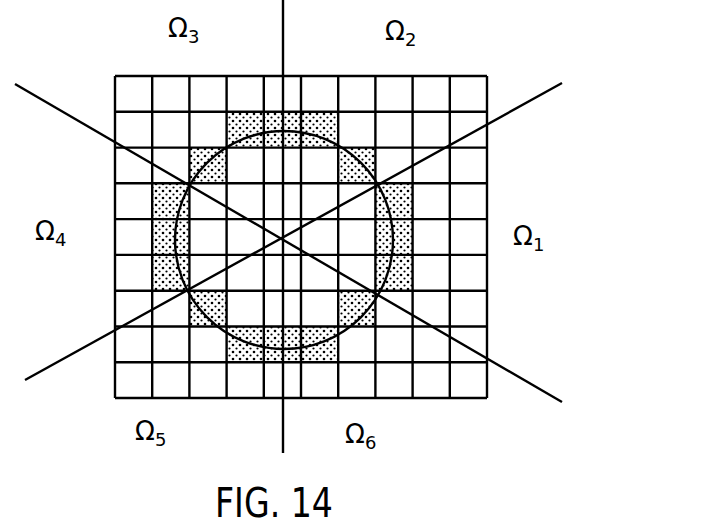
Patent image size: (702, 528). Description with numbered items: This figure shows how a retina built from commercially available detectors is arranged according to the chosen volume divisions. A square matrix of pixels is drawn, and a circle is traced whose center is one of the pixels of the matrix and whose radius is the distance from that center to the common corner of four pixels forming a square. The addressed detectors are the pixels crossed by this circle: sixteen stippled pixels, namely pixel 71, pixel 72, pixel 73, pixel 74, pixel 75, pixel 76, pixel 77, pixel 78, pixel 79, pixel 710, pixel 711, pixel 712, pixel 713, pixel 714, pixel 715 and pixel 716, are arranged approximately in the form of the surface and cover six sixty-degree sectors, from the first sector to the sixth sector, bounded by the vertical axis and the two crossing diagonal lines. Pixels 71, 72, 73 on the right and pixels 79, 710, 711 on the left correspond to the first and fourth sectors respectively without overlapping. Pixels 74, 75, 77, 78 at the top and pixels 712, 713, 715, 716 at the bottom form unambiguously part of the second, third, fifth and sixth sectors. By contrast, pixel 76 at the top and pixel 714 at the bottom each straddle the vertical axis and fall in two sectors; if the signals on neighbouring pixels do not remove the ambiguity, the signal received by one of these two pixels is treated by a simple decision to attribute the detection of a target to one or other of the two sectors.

The pixel 71 is at (410, 283).
The pixel 72 is at (413, 245).
The pixel 73 is at (413, 208).
The pixel 74 is at (378, 150).
The pixel 75 is at (338, 128).
The pixel 76 is at (292, 115).
The pixel 77 is at (250, 113).
The pixel 78 is at (195, 158).
The pixel 79 is at (160, 203).
The pixel 710 is at (160, 235).
The pixel 711 is at (165, 270).
The pixel 712 is at (195, 308).
The pixel 713 is at (226, 360).
The pixel 714 is at (270, 363).
The pixel 715 is at (300, 363).
The pixel 716 is at (376, 330).